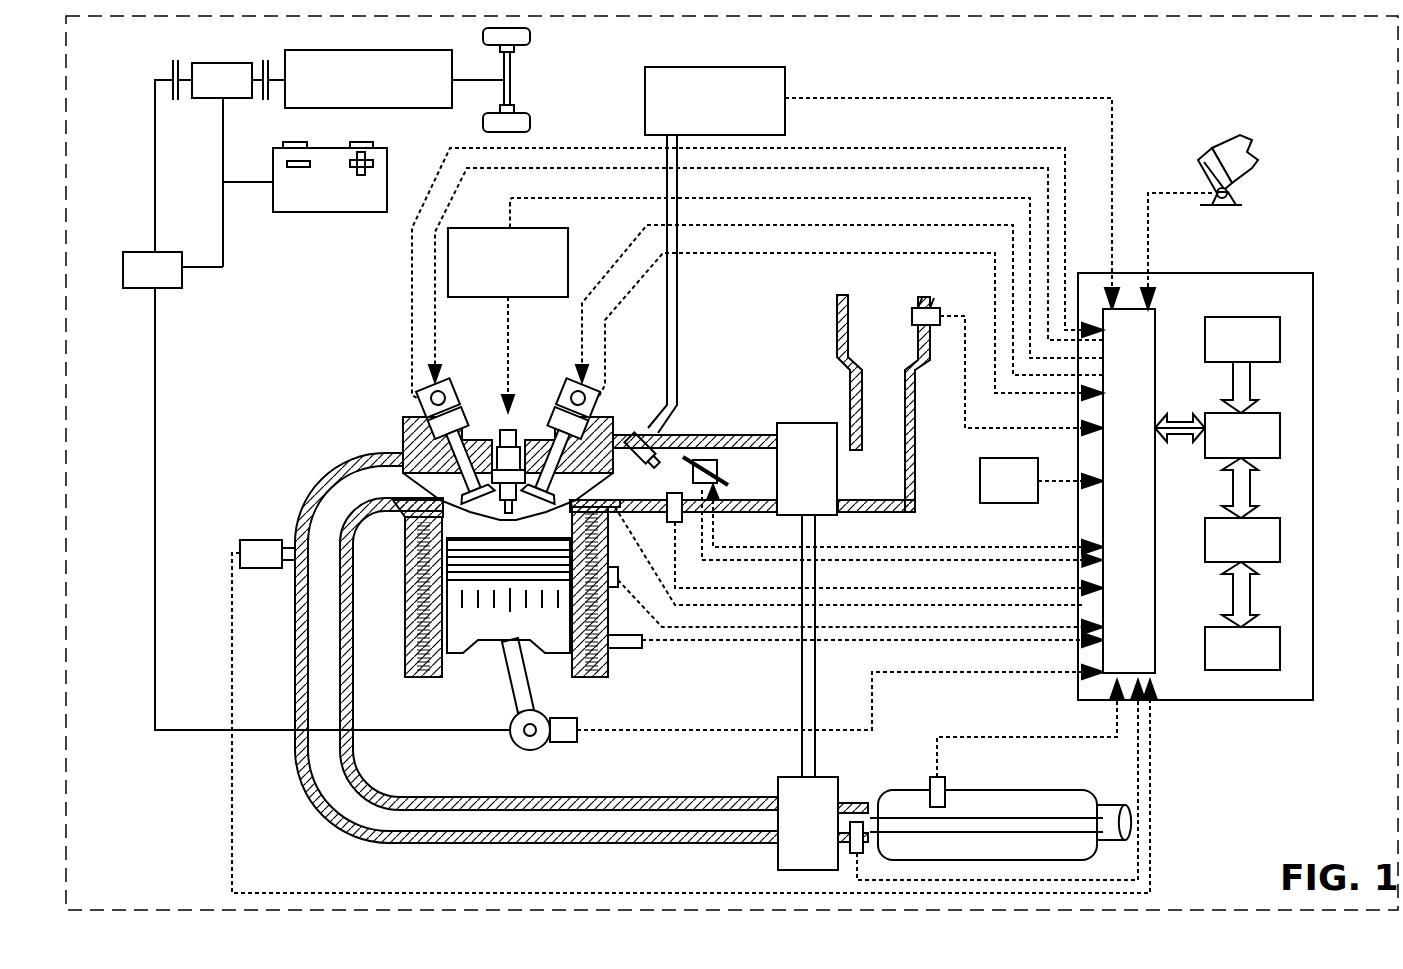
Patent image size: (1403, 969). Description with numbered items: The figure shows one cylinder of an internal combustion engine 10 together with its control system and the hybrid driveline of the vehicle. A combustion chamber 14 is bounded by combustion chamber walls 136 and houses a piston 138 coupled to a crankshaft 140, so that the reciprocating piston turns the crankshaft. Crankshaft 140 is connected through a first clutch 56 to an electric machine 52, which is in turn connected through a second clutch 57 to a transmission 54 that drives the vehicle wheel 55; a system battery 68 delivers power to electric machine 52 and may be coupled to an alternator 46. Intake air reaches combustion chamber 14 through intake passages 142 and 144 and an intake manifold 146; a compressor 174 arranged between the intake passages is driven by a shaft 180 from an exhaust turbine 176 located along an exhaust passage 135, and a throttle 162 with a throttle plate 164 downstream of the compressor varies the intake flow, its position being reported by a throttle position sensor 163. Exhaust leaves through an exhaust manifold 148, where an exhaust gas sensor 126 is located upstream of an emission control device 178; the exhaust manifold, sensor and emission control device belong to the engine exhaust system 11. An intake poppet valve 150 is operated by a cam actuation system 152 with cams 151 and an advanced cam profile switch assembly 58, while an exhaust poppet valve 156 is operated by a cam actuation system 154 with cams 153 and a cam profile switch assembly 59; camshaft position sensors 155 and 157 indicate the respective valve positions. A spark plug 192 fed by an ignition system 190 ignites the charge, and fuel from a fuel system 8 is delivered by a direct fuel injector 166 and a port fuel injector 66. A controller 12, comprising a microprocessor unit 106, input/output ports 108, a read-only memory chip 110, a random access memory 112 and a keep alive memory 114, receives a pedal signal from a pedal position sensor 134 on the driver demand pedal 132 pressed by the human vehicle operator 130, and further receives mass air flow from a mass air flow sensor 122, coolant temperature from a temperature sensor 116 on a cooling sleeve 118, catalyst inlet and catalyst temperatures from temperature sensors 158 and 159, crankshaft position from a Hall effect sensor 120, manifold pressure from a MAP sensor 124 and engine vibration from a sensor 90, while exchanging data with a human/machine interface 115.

The fuel system 8 is at (757, 67).
The internal combustion engine 10 is at (338, 370).
The engine exhaust system 11 is at (290, 500).
The controller 12 is at (1315, 278).
The combustion chamber 14 is at (412, 530).
The alternator 46 is at (125, 285).
The electric machine 52 is at (210, 63).
The transmission 54 is at (440, 108).
The vehicle wheel 55 is at (483, 40).
The first clutch 56 is at (173, 68).
The second clutch 57 is at (263, 66).
The advanced cam profile switch assembly 58 is at (458, 420).
The advanced cam profile switch assembly 59 is at (590, 430).
The port fuel injector 66 is at (645, 430).
The system battery 68 is at (330, 212).
The sensor 90 is at (625, 648).
The microprocessor unit 106 is at (1282, 432).
The input/output ports 108 is at (1160, 315).
The read-only memory chip 110 is at (1282, 335).
The random access memory 112 is at (1282, 540).
The keep alive memory 114 is at (1282, 648).
The human/machine interface 115 is at (1041, 480).
The temperature sensor 116 is at (620, 585).
The cooling sleeve 118 is at (608, 665).
The Hall effect sensor 120 is at (570, 745).
The mass air flow sensor 122 is at (940, 308).
The MAP sensor 124 is at (678, 530).
The exhaust gas sensor 126 is at (240, 545).
The human vehicle operator 130 is at (1258, 158).
The driver demand pedal 132 is at (1205, 172).
The pedal position sensor 134 is at (1232, 195).
The exhaust passage 135 is at (693, 798).
The combustion chamber walls 136 is at (440, 670).
The piston 138 is at (490, 625).
The crankshaft 140 is at (520, 748).
The intake passage 142 is at (900, 345).
The intake passage 144 is at (770, 485).
The intake manifold 146 is at (680, 485).
The exhaust manifold 148 is at (392, 494).
The intake poppet valve 150 is at (520, 475).
The cam 151 is at (568, 395).
The cam actuation system 152 is at (820, 303).
The cam 153 is at (455, 400).
The cam actuation system 154 is at (766, 275).
The camshaft position sensor 155 is at (592, 410).
The exhaust poppet valve 156 is at (418, 440).
The camshaft position sensor 157 is at (420, 392).
The temperature sensor 158 is at (852, 856).
The temperature sensor 159 is at (945, 785).
The throttle 162 is at (718, 455).
The throttle position sensor 163 is at (705, 505).
The throttle plate 164 is at (688, 455).
The direct fuel injector 166 is at (565, 512).
The compressor 174 is at (824, 484).
The exhaust turbine 176 is at (824, 837).
The emission control device 178 is at (1055, 790).
The shaft 180 is at (820, 742).
The ignition system 190 is at (462, 228).
The spark plug 192 is at (505, 432).